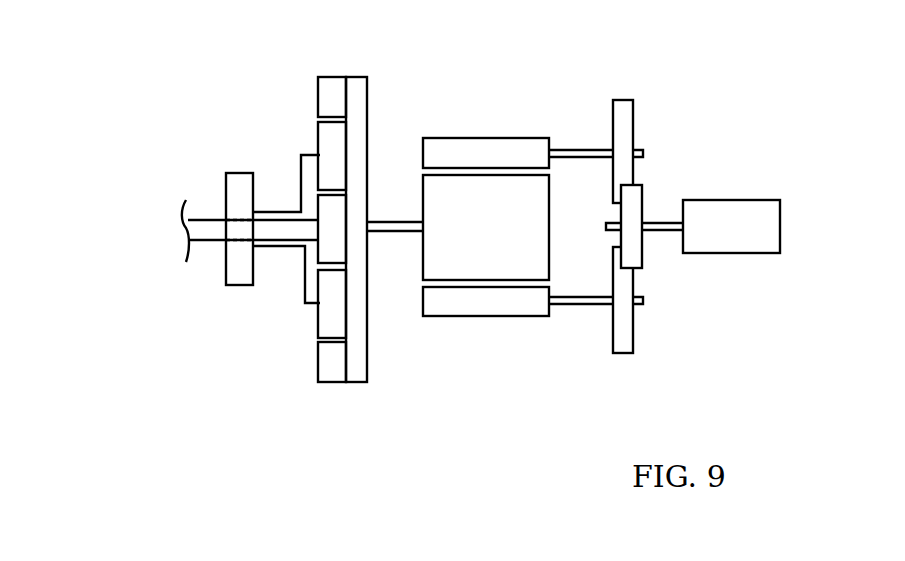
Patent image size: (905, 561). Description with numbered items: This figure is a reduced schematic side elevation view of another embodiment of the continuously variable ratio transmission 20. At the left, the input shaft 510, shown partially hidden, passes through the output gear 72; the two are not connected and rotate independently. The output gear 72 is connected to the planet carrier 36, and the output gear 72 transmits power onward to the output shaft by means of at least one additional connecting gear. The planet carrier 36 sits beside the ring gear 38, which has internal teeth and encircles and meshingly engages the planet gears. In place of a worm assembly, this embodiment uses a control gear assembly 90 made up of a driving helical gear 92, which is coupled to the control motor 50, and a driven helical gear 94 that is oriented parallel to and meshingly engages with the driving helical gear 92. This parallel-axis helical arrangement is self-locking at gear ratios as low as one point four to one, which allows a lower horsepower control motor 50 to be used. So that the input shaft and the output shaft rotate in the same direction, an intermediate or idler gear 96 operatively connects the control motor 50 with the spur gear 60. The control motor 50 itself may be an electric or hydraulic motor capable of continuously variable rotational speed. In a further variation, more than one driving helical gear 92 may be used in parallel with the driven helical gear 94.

The continuously variable ratio transmission 20 is at (108, 62).
The planet carrier 36 is at (300, 172).
The ring gear 38 is at (367, 110).
The control motor 50 is at (800, 180).
The spur gear 60 is at (633, 125).
The output gear 72 is at (230, 287).
The control gear assembly 90 is at (588, 94).
The driving helical gear 92 is at (465, 138).
The driven helical gear 94 is at (497, 239).
The idler gear 96 is at (642, 200).
The input shaft 510 is at (215, 217).